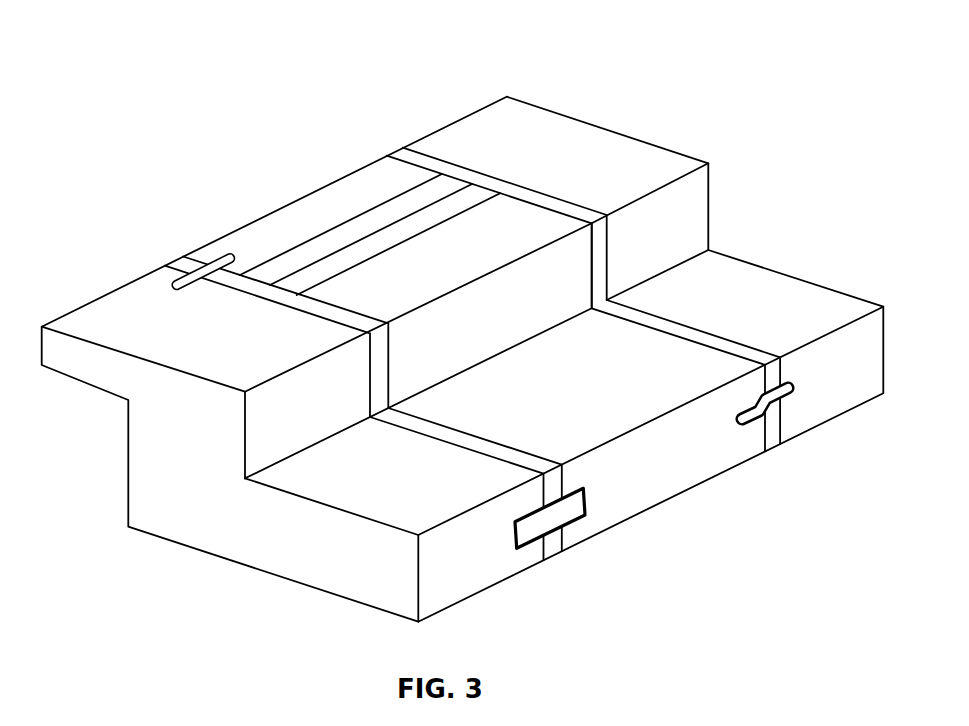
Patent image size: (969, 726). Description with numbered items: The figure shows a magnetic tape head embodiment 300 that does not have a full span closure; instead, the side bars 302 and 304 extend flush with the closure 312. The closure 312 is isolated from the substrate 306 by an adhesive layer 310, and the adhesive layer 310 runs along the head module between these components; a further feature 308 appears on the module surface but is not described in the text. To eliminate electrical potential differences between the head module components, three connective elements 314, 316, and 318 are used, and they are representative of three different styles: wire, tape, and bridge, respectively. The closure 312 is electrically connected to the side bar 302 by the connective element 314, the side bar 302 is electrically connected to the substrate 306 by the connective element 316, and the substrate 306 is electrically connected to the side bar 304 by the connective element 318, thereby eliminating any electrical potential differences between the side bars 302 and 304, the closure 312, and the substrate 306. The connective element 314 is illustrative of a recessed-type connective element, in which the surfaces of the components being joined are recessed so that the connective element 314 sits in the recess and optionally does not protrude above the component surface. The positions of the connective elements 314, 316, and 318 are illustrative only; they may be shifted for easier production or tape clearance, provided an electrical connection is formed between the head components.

The magnetic tape head embodiment 300 is at (463, 333).
The side bar 302 is at (138, 532).
The side bar 304 is at (580, 120).
The substrate 306 is at (667, 465).
The channel 308 is at (333, 267).
The adhesive layer 310 is at (366, 220).
The closure 312 is at (362, 187).
The connective element 314 is at (212, 248).
The connective element 316 is at (530, 547).
The connective element 318 is at (740, 427).